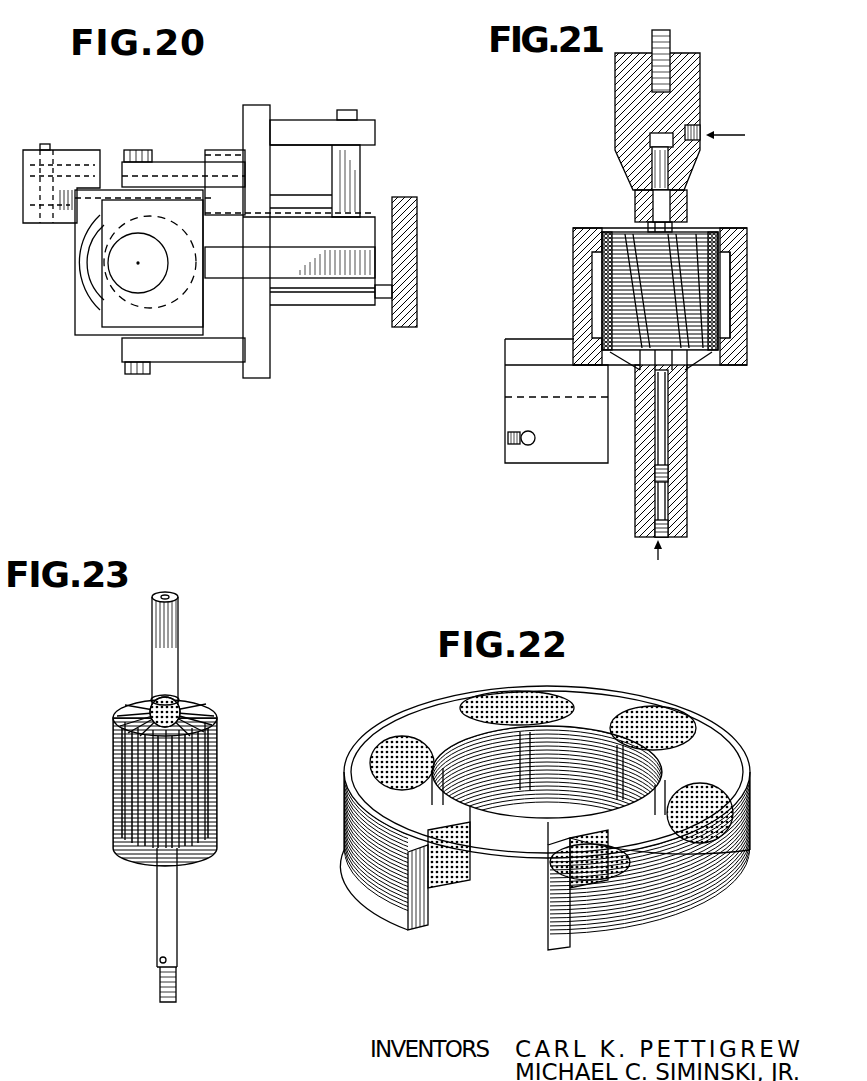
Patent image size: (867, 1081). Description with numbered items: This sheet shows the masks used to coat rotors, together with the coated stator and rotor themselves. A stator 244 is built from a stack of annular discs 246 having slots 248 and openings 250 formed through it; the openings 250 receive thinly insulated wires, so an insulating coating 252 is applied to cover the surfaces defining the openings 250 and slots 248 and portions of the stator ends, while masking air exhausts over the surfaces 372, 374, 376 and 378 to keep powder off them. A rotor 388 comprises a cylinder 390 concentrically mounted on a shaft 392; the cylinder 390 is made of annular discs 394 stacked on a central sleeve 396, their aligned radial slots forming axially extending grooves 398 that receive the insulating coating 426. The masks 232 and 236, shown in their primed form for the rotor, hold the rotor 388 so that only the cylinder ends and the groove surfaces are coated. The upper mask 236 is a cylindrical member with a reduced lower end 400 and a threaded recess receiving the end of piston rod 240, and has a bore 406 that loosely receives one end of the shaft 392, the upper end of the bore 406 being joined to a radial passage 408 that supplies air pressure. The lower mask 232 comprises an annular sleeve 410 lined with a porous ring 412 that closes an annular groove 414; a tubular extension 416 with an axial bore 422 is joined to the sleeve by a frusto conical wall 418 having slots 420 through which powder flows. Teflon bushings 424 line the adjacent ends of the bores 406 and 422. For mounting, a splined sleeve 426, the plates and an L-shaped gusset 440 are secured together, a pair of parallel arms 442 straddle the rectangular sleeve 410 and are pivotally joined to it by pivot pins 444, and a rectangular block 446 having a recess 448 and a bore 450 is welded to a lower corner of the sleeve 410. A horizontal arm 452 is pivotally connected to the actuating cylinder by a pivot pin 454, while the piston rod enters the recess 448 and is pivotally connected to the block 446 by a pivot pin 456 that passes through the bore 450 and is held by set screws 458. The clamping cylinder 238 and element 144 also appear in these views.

In FIG. 20, the flywheel/disc 144 is at (418, 218).
In FIG. 21, the mask 232 is at (575, 259).
In FIG. 21, the mask 236 is at (703, 97).
In FIG. 20, the clamping cylinder 238 is at (158, 230).
In FIG. 21, the piston rod 240 is at (672, 48).
In FIG. 22, the stator 244 is at (627, 691).
In FIG. 22, the annular discs 246 is at (550, 925).
In FIG. 22, the slots 248 is at (527, 788).
In FIG. 22, the openings 250 is at (673, 728).
In FIG. 22, the insulating coating 252 is at (430, 902).
In FIG. 22, the stator surface 372 is at (390, 738).
In FIG. 22, the stator surface 374 is at (383, 902).
In FIG. 22, the stator surface 376 is at (408, 925).
In FIG. 22, the stator surface 378 is at (578, 783).
In FIG. 21, the rotor 388 is at (698, 232).
In FIG. 23, the rotor 388 is at (212, 690).
In FIG. 23, the cylinder 390 is at (212, 735).
In FIG. 21, the shaft 392 is at (666, 427).
In FIG. 23, the shaft 392 is at (170, 915).
In FIG. 23, the annular discs 394 is at (135, 783).
In FIG. 23, the central sleeve 396 is at (172, 698).
In FIG. 23, the axially extending grooves 398 is at (195, 706).
In FIG. 21, the reduced lower end 400 is at (694, 225).
In FIG. 21, the bore 406 is at (650, 139).
In FIG. 21, the radial passage 408 is at (700, 125).
In FIG. 20, the annular sleeve 410 is at (80, 338).
In FIG. 21, the annular sleeve 410 is at (578, 290).
In FIG. 21, the porous ring 412 is at (745, 258).
In FIG. 21, the annular groove 414 is at (728, 274).
In FIG. 21, the tubular extension 416 is at (682, 478).
In FIG. 21, the frusto conical wall 418 is at (700, 368).
In FIG. 21, the slots 420 is at (650, 358).
In FIG. 21, the axial bore 422 is at (666, 502).
In FIG. 20, the Teflon bushings 424 is at (362, 172).
In FIG. 21, the Teflon bushings 424 is at (638, 202).
In FIG. 23, the sleeve 426 is at (150, 700).
In FIG. 20, the gusset 440 is at (340, 283).
In FIG. 20, the parallel arms 442 is at (172, 162).
In FIG. 20, the pivot pins 444 is at (140, 150).
In FIG. 20, the rectangular block 446 is at (65, 150).
In FIG. 21, the rectangular block 446 is at (566, 464).
In FIG. 21, the rectangular groove or recess 448 is at (520, 400).
In FIG. 21, the bore 450 is at (528, 446).
In FIG. 20, the horizontal arm 452 is at (310, 120).
In FIG. 20, the pivot pin 454 is at (358, 112).
In FIG. 20, the pivot pin 456 is at (45, 144).
In FIG. 21, the set screws 458 is at (510, 448).